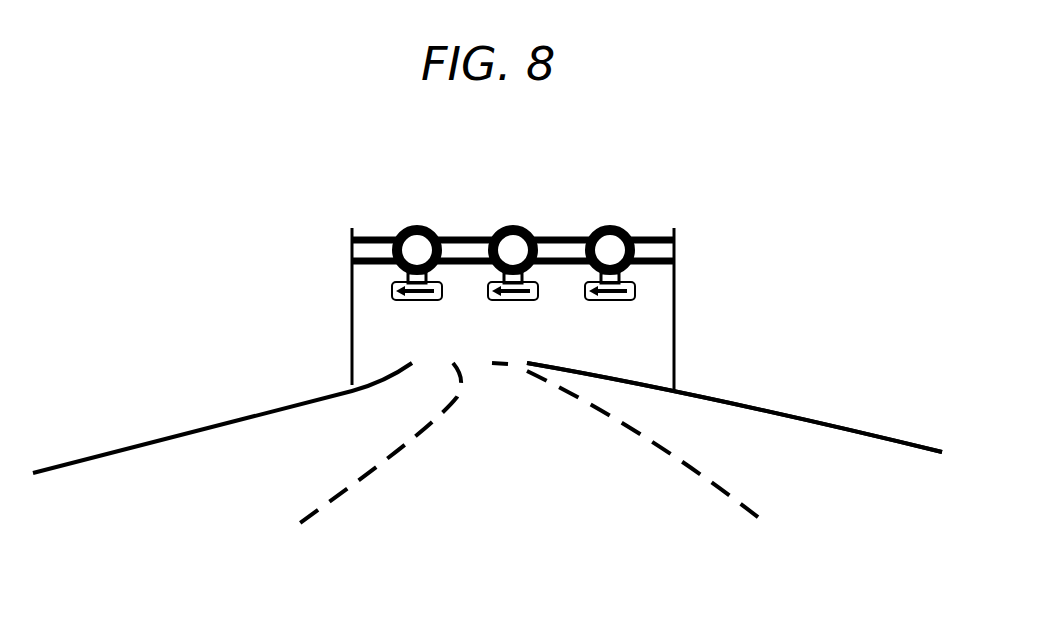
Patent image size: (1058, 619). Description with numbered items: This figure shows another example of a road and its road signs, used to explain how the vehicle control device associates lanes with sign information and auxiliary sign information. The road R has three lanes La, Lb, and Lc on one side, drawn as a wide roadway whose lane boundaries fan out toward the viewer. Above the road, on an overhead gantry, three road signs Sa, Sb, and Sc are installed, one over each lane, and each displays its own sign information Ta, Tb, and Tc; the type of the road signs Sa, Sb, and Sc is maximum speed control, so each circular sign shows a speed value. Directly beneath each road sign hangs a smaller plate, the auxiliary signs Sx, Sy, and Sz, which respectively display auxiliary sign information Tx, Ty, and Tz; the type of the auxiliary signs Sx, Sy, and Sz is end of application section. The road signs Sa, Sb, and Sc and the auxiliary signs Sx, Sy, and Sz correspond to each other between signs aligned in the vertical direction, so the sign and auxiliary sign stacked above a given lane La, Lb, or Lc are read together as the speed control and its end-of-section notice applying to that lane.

The road R is at (250, 415).
The lane La is at (200, 498).
The lane Lb is at (506, 498).
The lane Lc is at (844, 478).
The sign information Ta is at (404, 231).
The road sign Sa is at (413, 228).
The sign information Tb is at (500, 231).
The road sign Sb is at (509, 228).
The sign information Tc is at (597, 231).
The road sign Sc is at (608, 228).
The auxiliary sign information Tx is at (427, 300).
The auxiliary sign Sx is at (405, 300).
The auxiliary sign information Ty is at (523, 300).
The auxiliary sign Sy is at (501, 300).
The auxiliary sign information Tz is at (620, 300).
The auxiliary sign Sz is at (598, 300).